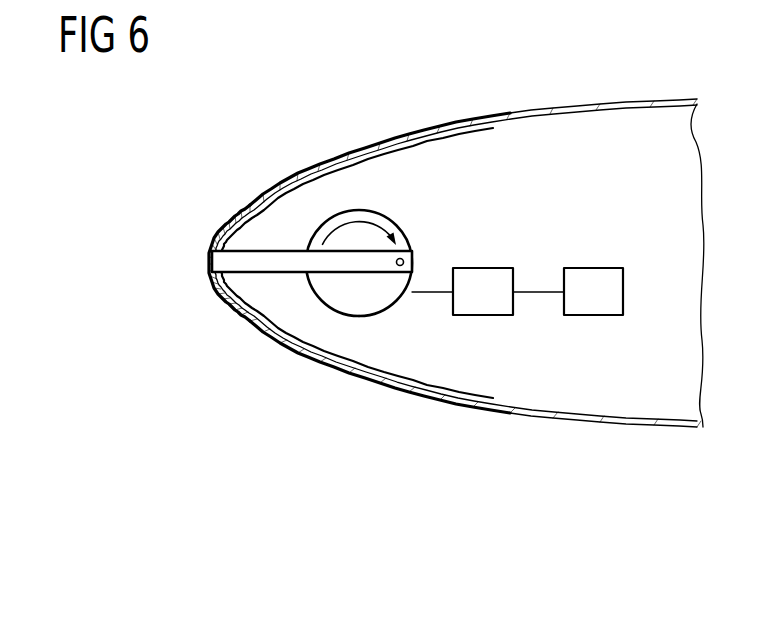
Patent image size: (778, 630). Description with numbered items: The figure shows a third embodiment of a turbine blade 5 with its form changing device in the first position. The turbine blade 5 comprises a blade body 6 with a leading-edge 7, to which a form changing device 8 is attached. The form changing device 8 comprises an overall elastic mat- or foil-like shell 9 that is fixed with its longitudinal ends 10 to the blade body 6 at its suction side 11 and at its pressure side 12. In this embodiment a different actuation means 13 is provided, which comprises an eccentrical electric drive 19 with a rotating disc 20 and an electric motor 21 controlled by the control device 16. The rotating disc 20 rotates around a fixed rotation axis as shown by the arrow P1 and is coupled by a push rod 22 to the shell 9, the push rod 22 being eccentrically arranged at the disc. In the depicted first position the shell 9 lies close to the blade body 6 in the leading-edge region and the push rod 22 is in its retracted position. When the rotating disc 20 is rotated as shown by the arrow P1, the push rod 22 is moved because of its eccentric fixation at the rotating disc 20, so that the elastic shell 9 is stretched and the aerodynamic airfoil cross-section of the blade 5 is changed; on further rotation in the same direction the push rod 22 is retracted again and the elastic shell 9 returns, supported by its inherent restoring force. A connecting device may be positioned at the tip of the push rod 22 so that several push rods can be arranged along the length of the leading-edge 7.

The turbine blade 5 is at (367, 419).
The blade body 6 is at (645, 430).
The leading-edge 7 is at (258, 224).
The form changing device 8 is at (200, 293).
The shell 9 is at (226, 228).
The longitudinal ends 10 is at (508, 112).
The suction side 11 is at (602, 100).
The pressure side 12 is at (595, 420).
The actuation means 13 is at (380, 324).
The control device 16 is at (596, 268).
The eccentrical electric drive 19 is at (403, 215).
The rotating disc 20 is at (347, 298).
The electric motor 21 is at (488, 268).
The push rod 22 is at (292, 277).
The arrow P1 is at (358, 220).